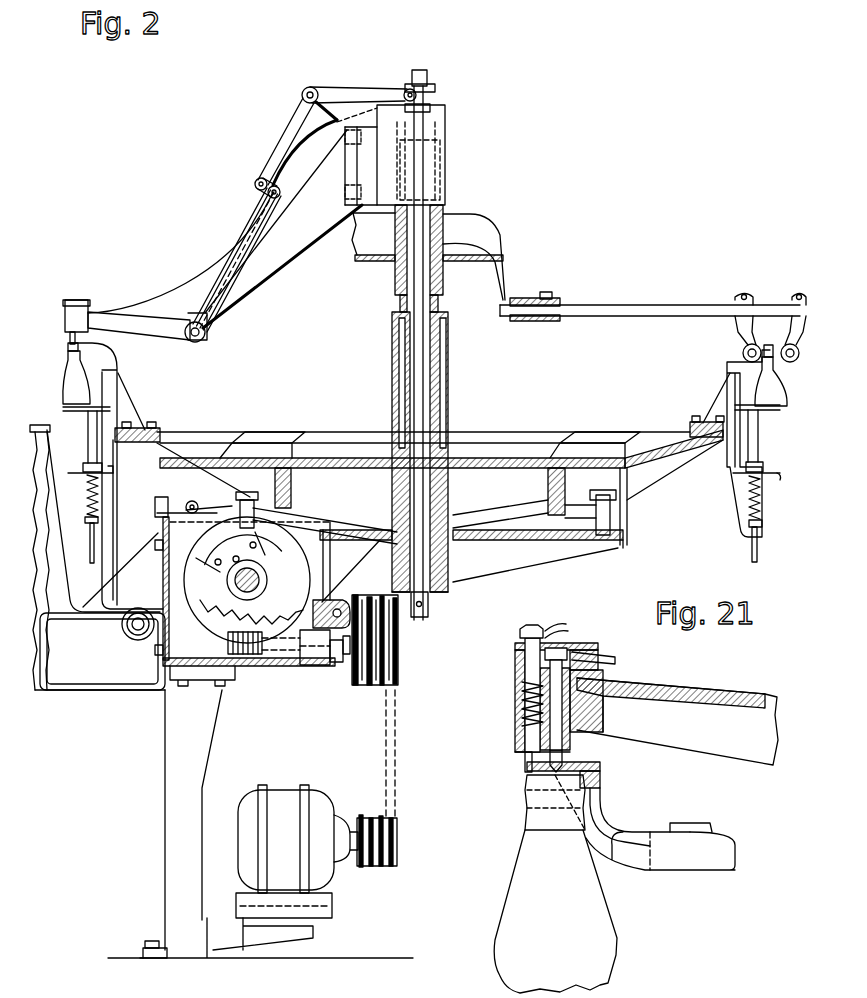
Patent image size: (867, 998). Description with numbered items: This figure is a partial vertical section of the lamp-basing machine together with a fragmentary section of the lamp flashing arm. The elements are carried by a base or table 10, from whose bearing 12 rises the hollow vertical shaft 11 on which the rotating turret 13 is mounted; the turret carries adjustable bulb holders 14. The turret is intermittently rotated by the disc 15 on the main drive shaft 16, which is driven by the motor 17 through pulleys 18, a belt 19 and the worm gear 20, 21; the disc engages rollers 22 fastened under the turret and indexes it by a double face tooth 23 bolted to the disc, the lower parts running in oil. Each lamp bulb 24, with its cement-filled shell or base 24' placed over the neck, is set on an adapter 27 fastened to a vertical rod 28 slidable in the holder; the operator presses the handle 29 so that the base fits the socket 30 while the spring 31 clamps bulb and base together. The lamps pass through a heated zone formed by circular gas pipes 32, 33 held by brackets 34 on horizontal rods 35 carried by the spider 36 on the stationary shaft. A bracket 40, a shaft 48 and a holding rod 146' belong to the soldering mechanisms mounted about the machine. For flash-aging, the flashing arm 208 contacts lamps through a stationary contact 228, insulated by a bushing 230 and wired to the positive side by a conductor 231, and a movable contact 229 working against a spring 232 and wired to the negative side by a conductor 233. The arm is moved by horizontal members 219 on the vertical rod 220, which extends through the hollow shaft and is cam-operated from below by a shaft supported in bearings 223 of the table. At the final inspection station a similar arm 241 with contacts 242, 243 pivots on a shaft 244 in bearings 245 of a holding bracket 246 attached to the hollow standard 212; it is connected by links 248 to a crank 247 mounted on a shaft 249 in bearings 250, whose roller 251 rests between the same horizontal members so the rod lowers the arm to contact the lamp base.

In FIG. 2, the base or table 10 is at (622, 542).
In FIG. 2, the hollow vertical shaft 11 is at (449, 402).
In FIG. 2, the bearing 12 is at (446, 592).
In FIG. 2, the rotating turret 13 is at (262, 424).
In FIG. 2, the adjustable bulb holder 14 is at (135, 409).
In FIG. 2, the disc 15 is at (197, 598).
In FIG. 2, the main drive shaft 16 is at (258, 578).
In FIG. 2, the motor 17 is at (284, 790).
In FIG. 2, the pulleys 18 is at (397, 670).
In FIG. 2, the belt 19 is at (400, 766).
In FIG. 2, the worm gear 20 is at (250, 656).
In FIG. 2, the worm gear 21 is at (228, 620).
In FIG. 2, the rollers 22 is at (285, 520).
In FIG. 2, the double face tooth 23 is at (205, 553).
In FIG. 2, the lamp bulb 24 is at (424, 378).
In FIG. 21, the lamp bulb 24 is at (546, 911).
In FIG. 21, the shell or base 24' is at (536, 802).
In FIG. 2, the adapter 27 is at (75, 412).
In FIG. 2, the vertical rod 28 is at (88, 450).
In FIG. 2, the handle 29 is at (86, 476).
In FIG. 2, the socket 30 is at (68, 348).
In FIG. 21, the socket 30 is at (601, 768).
In FIG. 2, the spring 31 is at (88, 510).
In FIG. 2, the circular gas pipe 32 is at (744, 350).
In FIG. 2, the circular gas pipe 33 is at (797, 355).
In FIG. 2, the bracket 34 is at (760, 303).
In FIG. 2, the horizontal rod 35 is at (640, 303).
In FIG. 2, the spider 36 is at (537, 265).
In FIG. 2, the bracket 40 is at (40, 424).
In FIG. 2, the shaft 48 is at (135, 630).
In FIG. 2, the holding rod 146' is at (187, 500).
In FIG. 21, the flashing arm 208 is at (757, 762).
In FIG. 2, the hollow standard 212 is at (442, 128).
In FIG. 2, the horizontal members 219 is at (431, 104).
In FIG. 2, the vertical rod 220 is at (426, 74).
In FIG. 2, the bearing 223 is at (338, 600).
In FIG. 21, the contact 228 is at (563, 758).
In FIG. 21, the contact 229 is at (524, 752).
In FIG. 21, the bushing 230 is at (583, 720).
In FIG. 21, the conductor 231 is at (616, 660).
In FIG. 21, the spring 232 is at (524, 712).
In FIG. 21, the conductor 233 is at (556, 631).
In FIG. 2, the arm 241 is at (130, 311).
In FIG. 2, the contact 242 is at (77, 340).
In FIG. 2, the contact 243 is at (66, 336).
In FIG. 2, the shaft 244 is at (203, 340).
In FIG. 2, the bearing 245 is at (192, 342).
In FIG. 2, the holding bracket 246 is at (292, 270).
In FIG. 2, the crank 247 is at (276, 147).
In FIG. 2, the links 248 is at (258, 192).
In FIG. 2, the shaft 249 is at (308, 86).
In FIG. 2, the bearing 250 is at (332, 88).
In FIG. 2, the roller 251 is at (406, 90).